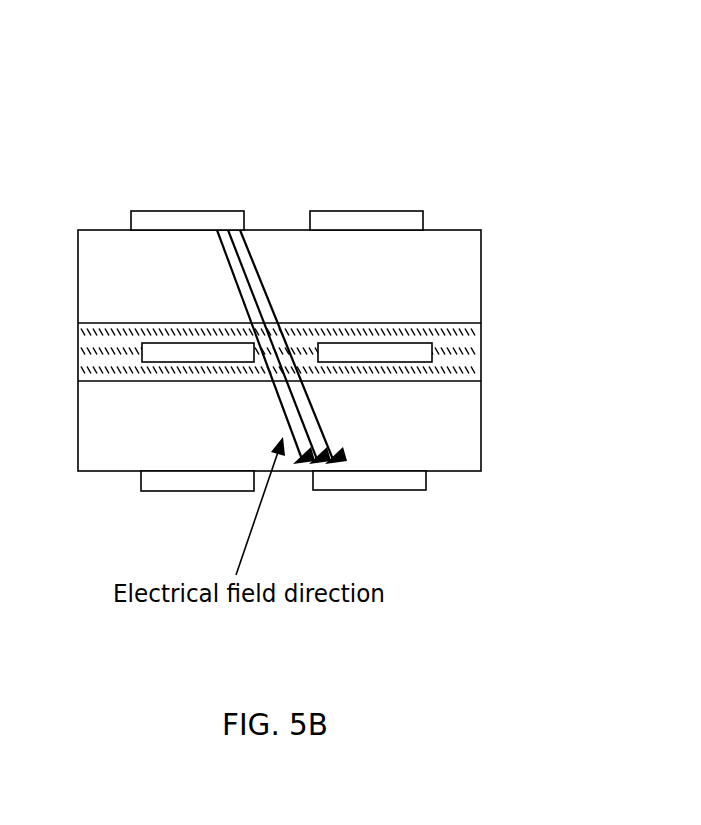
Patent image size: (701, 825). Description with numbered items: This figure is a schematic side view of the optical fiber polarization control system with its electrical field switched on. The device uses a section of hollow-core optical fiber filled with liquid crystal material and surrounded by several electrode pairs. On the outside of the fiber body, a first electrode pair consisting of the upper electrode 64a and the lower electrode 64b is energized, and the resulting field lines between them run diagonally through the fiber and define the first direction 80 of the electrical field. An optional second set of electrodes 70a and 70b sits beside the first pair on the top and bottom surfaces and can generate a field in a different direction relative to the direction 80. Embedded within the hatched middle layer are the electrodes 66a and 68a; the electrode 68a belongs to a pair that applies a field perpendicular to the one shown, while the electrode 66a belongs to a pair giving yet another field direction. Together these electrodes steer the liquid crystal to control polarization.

The first electrode 64a is at (187, 211).
The second-set electrode 70a is at (368, 211).
The first direction of electrical field 80 is at (277, 320).
The electrode of pair 66a–66b 66a is at (192, 363).
The electrode of pair 68a–68b 68a is at (383, 363).
The second-set electrode 70b is at (195, 491).
The first electrode 64b is at (375, 490).